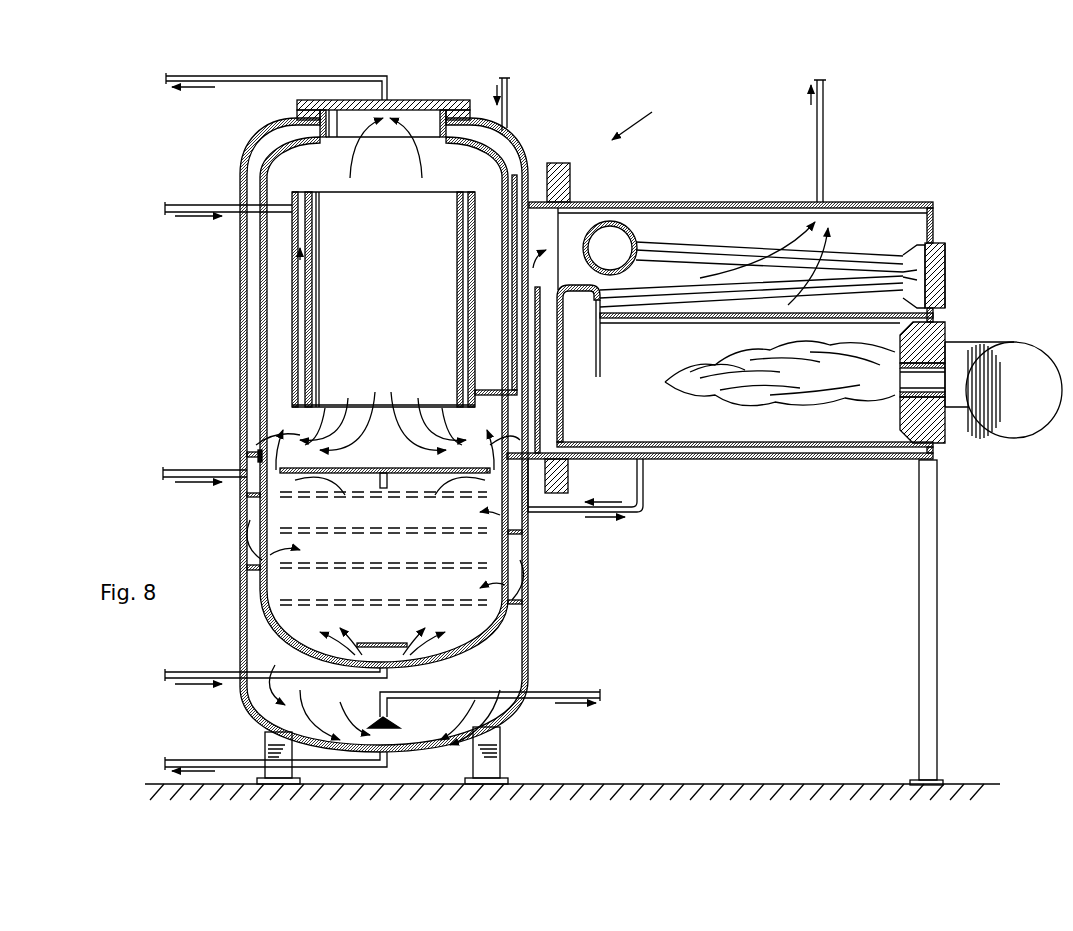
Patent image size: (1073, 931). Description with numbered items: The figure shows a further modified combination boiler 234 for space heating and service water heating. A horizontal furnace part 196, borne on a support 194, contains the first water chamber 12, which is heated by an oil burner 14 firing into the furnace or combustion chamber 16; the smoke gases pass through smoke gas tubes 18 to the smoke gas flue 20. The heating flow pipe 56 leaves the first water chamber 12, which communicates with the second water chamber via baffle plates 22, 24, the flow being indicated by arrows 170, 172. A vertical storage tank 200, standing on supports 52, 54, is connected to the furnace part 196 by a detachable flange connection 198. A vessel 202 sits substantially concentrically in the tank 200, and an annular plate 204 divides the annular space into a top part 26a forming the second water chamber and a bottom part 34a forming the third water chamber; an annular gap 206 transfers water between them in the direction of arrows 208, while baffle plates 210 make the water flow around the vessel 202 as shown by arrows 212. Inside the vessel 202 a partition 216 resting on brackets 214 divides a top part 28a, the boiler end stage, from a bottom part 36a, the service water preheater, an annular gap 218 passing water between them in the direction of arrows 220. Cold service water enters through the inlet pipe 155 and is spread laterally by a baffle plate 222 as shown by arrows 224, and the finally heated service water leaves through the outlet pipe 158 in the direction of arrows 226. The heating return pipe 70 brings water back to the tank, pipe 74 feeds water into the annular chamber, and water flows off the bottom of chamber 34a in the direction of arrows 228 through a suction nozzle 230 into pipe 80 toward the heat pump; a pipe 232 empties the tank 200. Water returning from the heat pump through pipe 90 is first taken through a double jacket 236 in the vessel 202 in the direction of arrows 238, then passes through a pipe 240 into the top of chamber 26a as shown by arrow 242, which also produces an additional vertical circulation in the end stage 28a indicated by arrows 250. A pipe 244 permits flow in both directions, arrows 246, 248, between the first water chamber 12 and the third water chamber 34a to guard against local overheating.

The first water chamber 12 is at (876, 205).
The oil burner 14 is at (997, 350).
The furnace or combustion chamber 16 is at (853, 460).
The smoke gas tubes 18 is at (870, 266).
The smoke gas flue 20 is at (613, 222).
The baffle plates 22 is at (526, 238).
The baffle plate 24 is at (541, 378).
The top part of annular space (second water chamber) 26a is at (252, 330).
The top part of vessel (boiler end stage) 28a is at (277, 258).
The bottom part of annular space (third water chamber) 34a is at (524, 640).
The bottom part of vessel (service water preheater) 36a is at (516, 533).
The support 52 is at (266, 745).
The support 54 is at (501, 748).
The heating flow pipe 56 is at (824, 100).
The heating return pipe 70 is at (200, 470).
The pipe 74 is at (508, 100).
The pipe 80 is at (576, 692).
The pipe 90 is at (187, 204).
The inlet pipe 155 is at (205, 672).
The service hot water outlet pipe 158 is at (232, 82).
The arrow 170 is at (541, 427).
The arrow 172 is at (536, 278).
The support 194 is at (936, 608).
The horizontal furnace part 196 is at (764, 460).
The detachable flange connection 198 is at (570, 476).
The vertical storage tank 200 is at (529, 585).
The vessel 202 is at (262, 366).
The annular plate 204 is at (258, 455).
The annular gap 206 is at (252, 452).
The arrows 208 is at (497, 432).
The baffle plates 210 is at (253, 563).
The arrows 212 is at (300, 548).
The brackets 214 is at (380, 485).
The partition 216 is at (418, 468).
The annular gap 218 is at (492, 463).
The arrows 220 is at (289, 488).
The baffle plate 222 is at (392, 643).
The arrows 224 is at (411, 632).
The arrows 226 is at (410, 165).
The arrows 228 is at (345, 718).
The suction nozzle 230 is at (392, 720).
The pipe 232 is at (392, 765).
The combination boiler 234 is at (646, 115).
The double jacket 236 is at (313, 317).
The arrows 238 is at (313, 252).
The pipe 240 is at (517, 208).
The arrow 242 is at (521, 163).
The pipe 244 is at (646, 500).
The arrow 246 is at (625, 502).
The arrow 248 is at (600, 522).
The arrows 250 is at (395, 398).